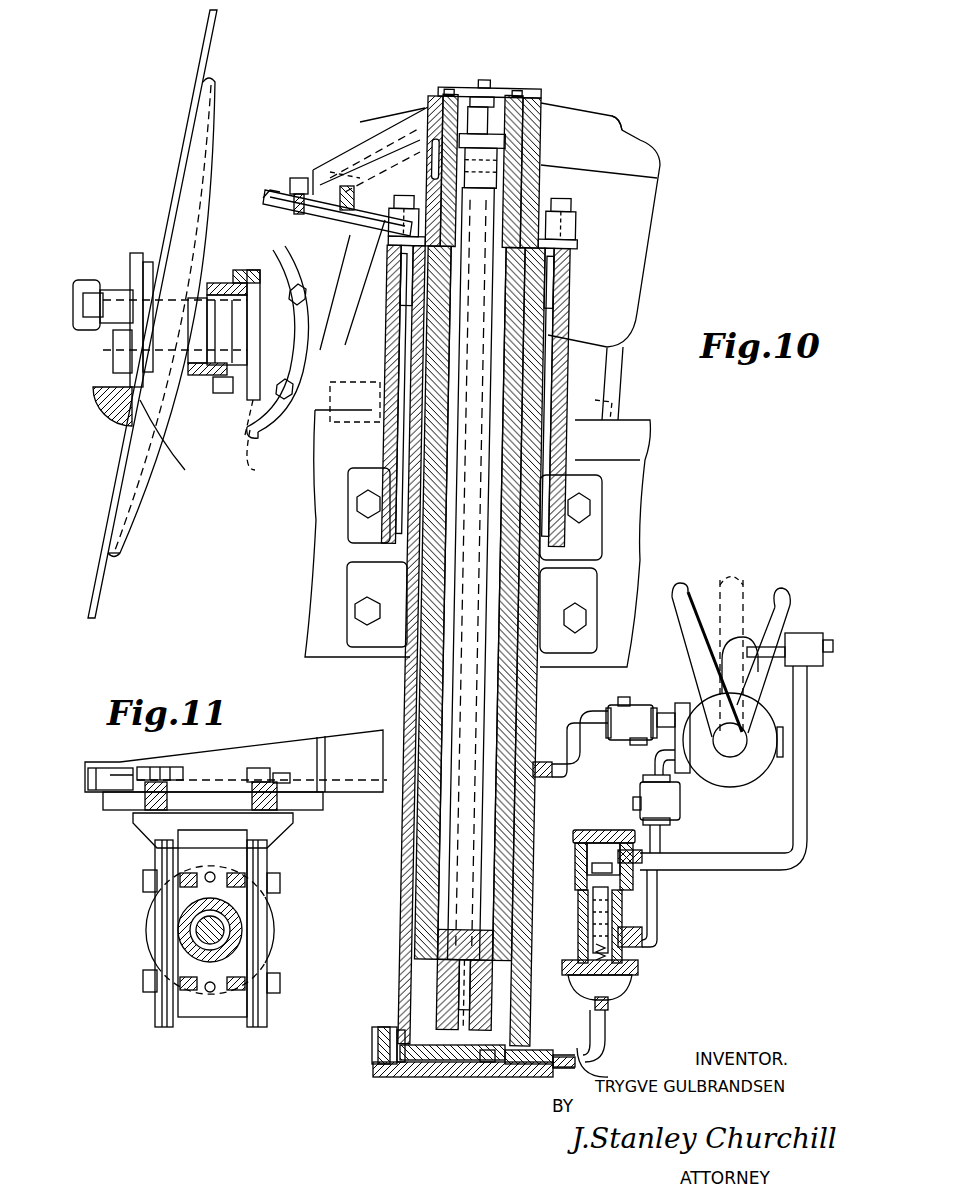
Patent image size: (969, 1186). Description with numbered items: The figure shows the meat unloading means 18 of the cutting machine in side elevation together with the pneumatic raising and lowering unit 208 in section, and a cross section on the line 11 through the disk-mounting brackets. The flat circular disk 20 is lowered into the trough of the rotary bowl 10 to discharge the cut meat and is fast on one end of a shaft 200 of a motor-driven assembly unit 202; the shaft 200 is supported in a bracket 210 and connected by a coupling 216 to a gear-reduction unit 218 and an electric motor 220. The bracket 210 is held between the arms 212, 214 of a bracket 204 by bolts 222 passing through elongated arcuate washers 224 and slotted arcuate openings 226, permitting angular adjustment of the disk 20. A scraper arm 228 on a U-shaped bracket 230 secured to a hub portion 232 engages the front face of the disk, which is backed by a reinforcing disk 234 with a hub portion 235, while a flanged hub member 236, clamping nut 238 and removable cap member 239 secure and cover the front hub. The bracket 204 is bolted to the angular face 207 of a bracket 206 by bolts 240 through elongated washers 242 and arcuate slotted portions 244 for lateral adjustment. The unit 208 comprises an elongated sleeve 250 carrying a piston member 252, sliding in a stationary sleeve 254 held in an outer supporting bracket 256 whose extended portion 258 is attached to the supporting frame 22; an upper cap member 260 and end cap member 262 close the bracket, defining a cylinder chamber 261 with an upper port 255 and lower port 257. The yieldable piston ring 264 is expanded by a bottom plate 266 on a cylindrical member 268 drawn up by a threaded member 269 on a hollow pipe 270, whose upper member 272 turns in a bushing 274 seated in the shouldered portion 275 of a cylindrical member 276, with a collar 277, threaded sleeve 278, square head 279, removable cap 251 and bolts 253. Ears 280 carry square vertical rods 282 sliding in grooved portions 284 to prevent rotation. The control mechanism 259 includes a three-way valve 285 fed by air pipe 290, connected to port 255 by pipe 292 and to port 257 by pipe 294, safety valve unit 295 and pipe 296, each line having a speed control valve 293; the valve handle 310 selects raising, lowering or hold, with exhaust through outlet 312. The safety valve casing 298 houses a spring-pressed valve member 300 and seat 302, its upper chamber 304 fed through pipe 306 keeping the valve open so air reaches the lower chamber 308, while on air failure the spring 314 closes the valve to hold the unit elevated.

In FIG. 10, the rotary bowl 10 is at (648, 420).
In FIG. 10, the section line 11 is at (262, 240).
In FIG. 10, the meat unloading means 18 is at (127, 108).
In FIG. 10, the flat circular disk 20 is at (207, 46).
In FIG. 10, the supporting frame 22 is at (632, 505).
In FIG. 10, the shaft 200 is at (180, 245).
In FIG. 11, the shaft 200 is at (224, 928).
In FIG. 10, the motor-driven assembly unit 202 is at (693, 140).
In FIG. 10, the bracket 204 is at (268, 205).
In FIG. 11, the bracket 204 is at (108, 810).
In FIG. 10, the bracket 206 is at (412, 112).
In FIG. 11, the bracket 206 is at (330, 745).
In FIG. 10, the angular face 207 is at (276, 190).
In FIG. 11, the angular face 207 is at (100, 772).
In FIG. 10, the pneumatically operated raising and lowering unit 208 is at (605, 272).
In FIG. 10, the bracket 210 is at (255, 270).
In FIG. 11, the bracket 210 is at (200, 1020).
In FIG. 11, the arm 212 is at (158, 1025).
In FIG. 10, the arm 214 is at (252, 440).
In FIG. 11, the arm 214 is at (258, 1030).
In FIG. 10, the coupling 216 is at (352, 321).
In FIG. 10, the gear-reduction unit 218 is at (600, 382).
In FIG. 10, the electric motor 220 is at (662, 170).
In FIG. 10, the bolts 222 is at (302, 290).
In FIG. 11, the bolts 222 is at (143, 880).
In FIG. 10, the elongated arcuate washers 224 is at (280, 438).
In FIG. 11, the elongated arcuate washers 224 is at (148, 930).
In FIG. 10, the slotted arcuate openings 226 is at (265, 445).
In FIG. 11, the slotted arcuate openings 226 is at (245, 860).
In FIG. 10, the scraper arm 228 is at (130, 430).
In FIG. 10, the U-shaped bracket 230 is at (210, 380).
In FIG. 10, the hub portion 232 is at (238, 282).
In FIG. 10, the reinforcing disk 234 is at (132, 500).
In FIG. 10, the hub portion 235 is at (100, 402).
In FIG. 10, the flanged hub member 236 is at (132, 270).
In FIG. 10, the clamping nut 238 is at (115, 322).
In FIG. 10, the removable hood or cap member 239 is at (100, 290).
In FIG. 10, the bolts 240 is at (298, 178).
In FIG. 11, the bolts 240 is at (165, 785).
In FIG. 10, the elongated washers 242 is at (359, 184).
In FIG. 11, the elongated washers 242 is at (215, 780).
In FIG. 11, the arcuate slotted portions 244 is at (213, 820).
In FIG. 10, the elongated sleeve 250 is at (440, 922).
In FIG. 10, the removable cap 251 is at (530, 95).
In FIG. 10, the piston member 252 is at (450, 992).
In FIG. 10, the bolts 253 is at (484, 80).
In FIG. 10, the stationary sleeve 254 is at (414, 700).
In FIG. 10, the upper port 255 is at (552, 760).
In FIG. 10, the outer supporting bracket 256 is at (412, 835).
In FIG. 10, the lower port 257 is at (515, 1072).
In FIG. 10, the extended portion 258 is at (595, 540).
In FIG. 10, the pneumatic control mechanism 259 is at (765, 552).
In FIG. 10, the upper cap member 260 is at (577, 264).
In FIG. 10, the cylinder chamber 261 is at (428, 892).
In FIG. 10, the end cap member 262 is at (372, 1072).
In FIG. 10, the piston ring or washer 264 is at (405, 1032).
In FIG. 10, the bottom plate 266 is at (435, 1062).
In FIG. 10, the cylindrical member 268 is at (482, 1062).
In FIG. 10, the threaded member 269 is at (452, 952).
In FIG. 10, the elongated sleeve or hollow pipe 270 is at (537, 584).
In FIG. 10, the member 272 is at (434, 152).
In FIG. 10, the bushing 274 is at (550, 130).
In FIG. 10, the shouldered portion 275 is at (400, 118).
In FIG. 10, the cylindrical member 276 is at (523, 160).
In FIG. 10, the collar 277 is at (522, 118).
In FIG. 10, the threaded sleeve 278 is at (505, 92).
In FIG. 10, the square head 279 is at (458, 93).
In FIG. 10, the laterally extended ears 280 is at (572, 224).
In FIG. 10, the vertical rod 282 is at (575, 290).
In FIG. 10, the vertically grooved portions 284 is at (572, 322).
In FIG. 10, the three-way valve 285 is at (722, 787).
In FIG. 10, the pipe 290 is at (822, 636).
In FIG. 10, the pipe 292 is at (573, 716).
In FIG. 10, the speed control valve 293 is at (634, 697).
In FIG. 10, the pipe 294 is at (658, 902).
In FIG. 10, the safety valve unit 295 is at (680, 982).
In FIG. 10, the pipe 296 is at (608, 1034).
In FIG. 10, the casing 298 is at (622, 912).
In FIG. 10, the spring-pressed valve member 300 is at (580, 938).
In FIG. 10, the valve seat 302 is at (642, 955).
In FIG. 10, the upper chamber 304 is at (612, 830).
In FIG. 10, the pipe 306 is at (800, 830).
In FIG. 10, the lower chamber 308 is at (612, 992).
In FIG. 10, the valve handle 310 is at (742, 588).
In FIG. 10, the exhaust outlet 312 is at (748, 712).
In FIG. 10, the spring 314 is at (590, 962).